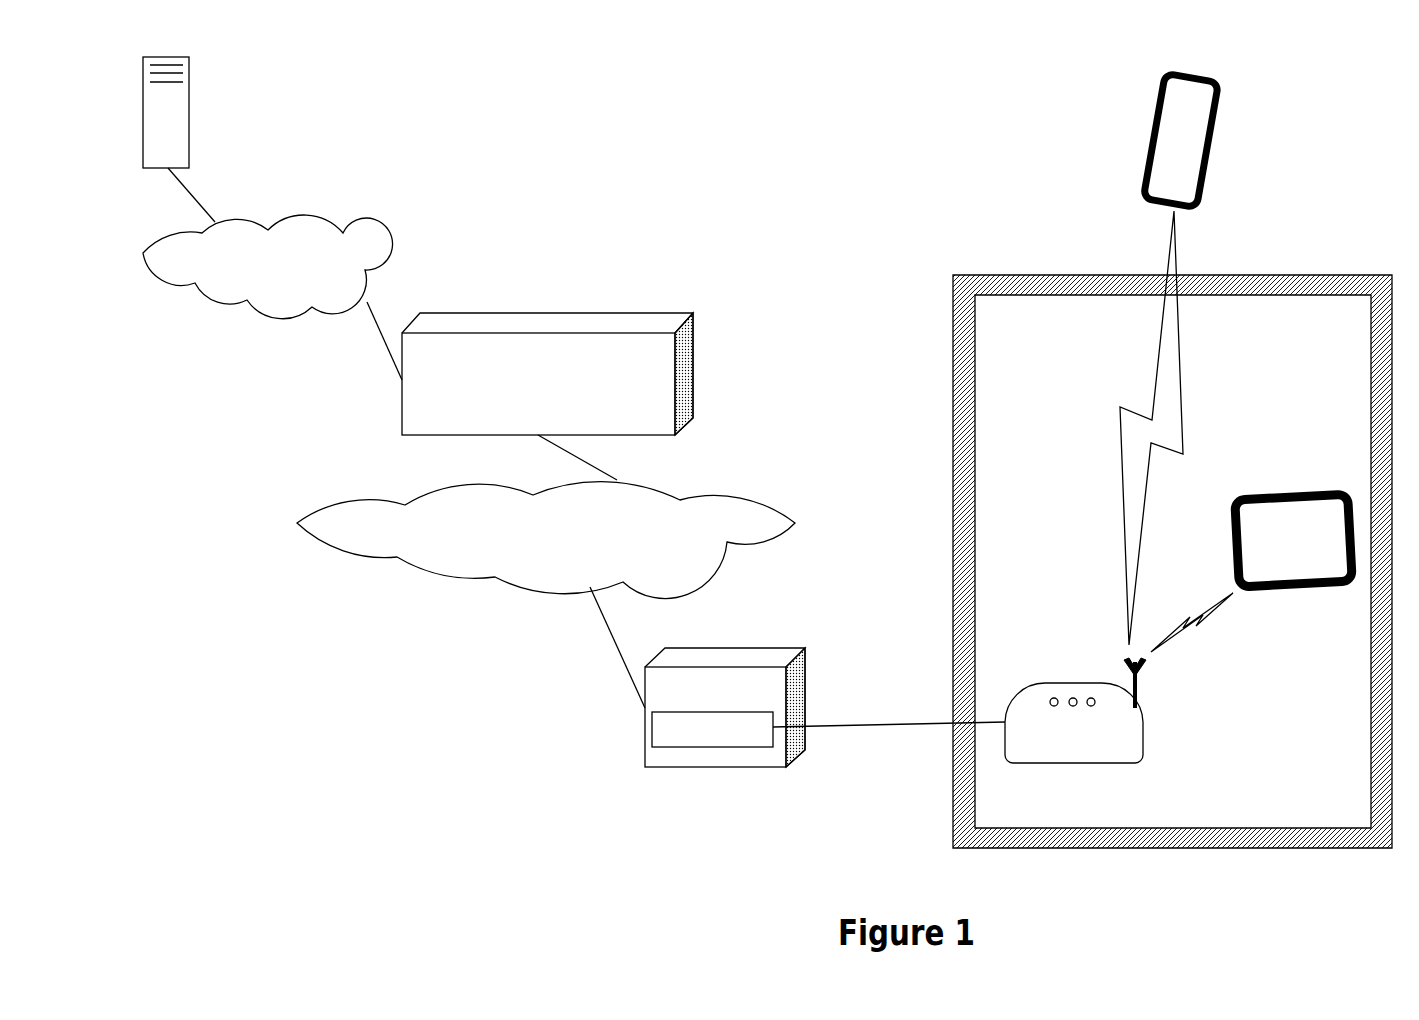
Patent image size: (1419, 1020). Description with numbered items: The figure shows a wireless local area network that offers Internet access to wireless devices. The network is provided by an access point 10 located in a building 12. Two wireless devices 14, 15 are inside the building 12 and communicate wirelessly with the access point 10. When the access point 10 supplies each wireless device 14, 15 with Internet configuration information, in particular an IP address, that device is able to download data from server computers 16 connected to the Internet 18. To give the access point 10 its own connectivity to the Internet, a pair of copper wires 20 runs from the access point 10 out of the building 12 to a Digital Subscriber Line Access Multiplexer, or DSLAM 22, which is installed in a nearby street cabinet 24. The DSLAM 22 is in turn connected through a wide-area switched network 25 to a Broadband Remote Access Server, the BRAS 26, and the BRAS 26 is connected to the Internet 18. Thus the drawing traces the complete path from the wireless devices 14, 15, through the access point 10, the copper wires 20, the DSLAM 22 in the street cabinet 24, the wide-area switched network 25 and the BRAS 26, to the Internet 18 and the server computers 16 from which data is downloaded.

The access point 10 is at (1123, 763).
The building 12 is at (1263, 277).
The wireless device 14 is at (1219, 95).
The wireless device 15 is at (1283, 496).
The server computer 16 is at (189, 113).
The Internet 18 is at (293, 221).
The pair of copper wires 20 is at (828, 727).
The Digital Subscriber Line Access Multiplexer 22 is at (723, 747).
The street cabinet 24 is at (783, 662).
The wide-area switched network 25 is at (770, 522).
The Broadband Remote Access Server 26 is at (647, 313).